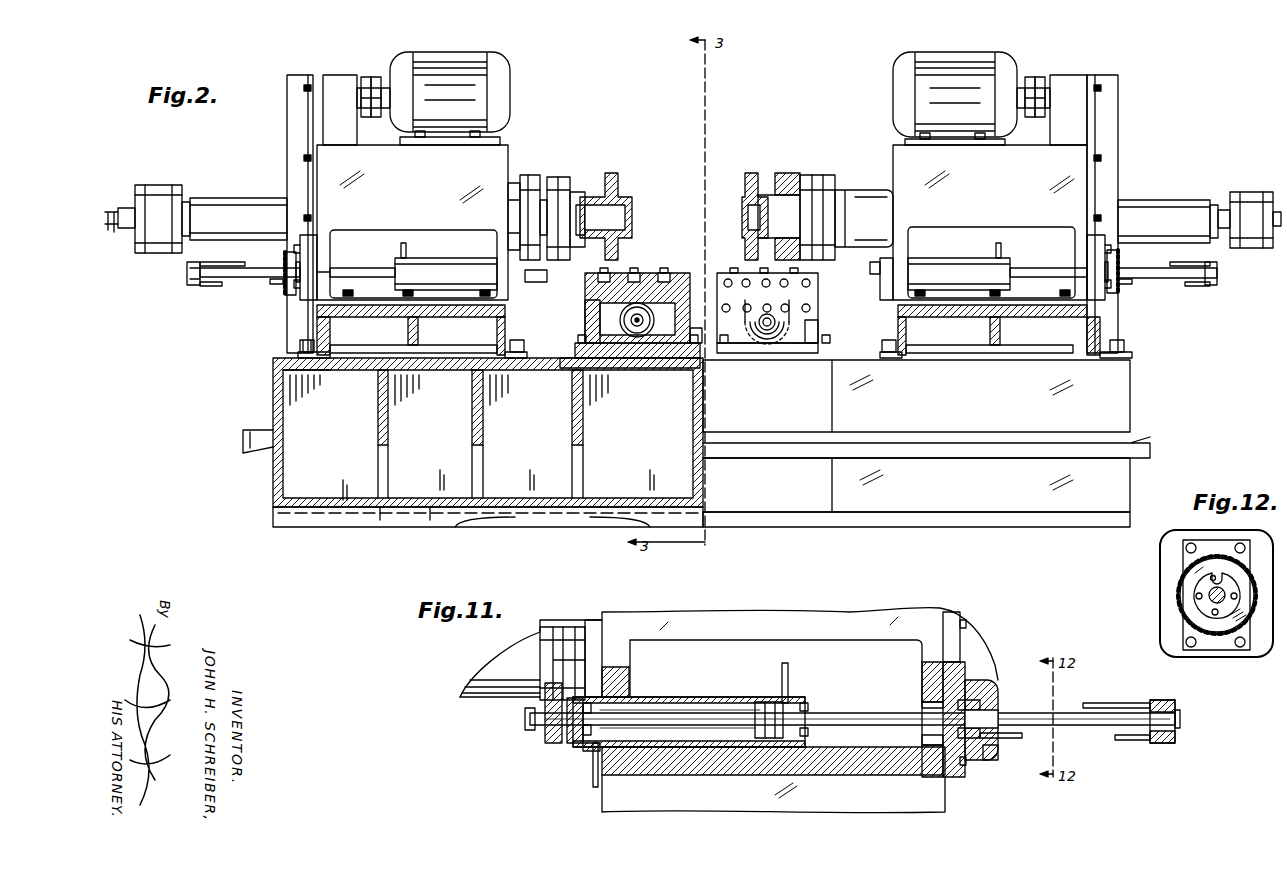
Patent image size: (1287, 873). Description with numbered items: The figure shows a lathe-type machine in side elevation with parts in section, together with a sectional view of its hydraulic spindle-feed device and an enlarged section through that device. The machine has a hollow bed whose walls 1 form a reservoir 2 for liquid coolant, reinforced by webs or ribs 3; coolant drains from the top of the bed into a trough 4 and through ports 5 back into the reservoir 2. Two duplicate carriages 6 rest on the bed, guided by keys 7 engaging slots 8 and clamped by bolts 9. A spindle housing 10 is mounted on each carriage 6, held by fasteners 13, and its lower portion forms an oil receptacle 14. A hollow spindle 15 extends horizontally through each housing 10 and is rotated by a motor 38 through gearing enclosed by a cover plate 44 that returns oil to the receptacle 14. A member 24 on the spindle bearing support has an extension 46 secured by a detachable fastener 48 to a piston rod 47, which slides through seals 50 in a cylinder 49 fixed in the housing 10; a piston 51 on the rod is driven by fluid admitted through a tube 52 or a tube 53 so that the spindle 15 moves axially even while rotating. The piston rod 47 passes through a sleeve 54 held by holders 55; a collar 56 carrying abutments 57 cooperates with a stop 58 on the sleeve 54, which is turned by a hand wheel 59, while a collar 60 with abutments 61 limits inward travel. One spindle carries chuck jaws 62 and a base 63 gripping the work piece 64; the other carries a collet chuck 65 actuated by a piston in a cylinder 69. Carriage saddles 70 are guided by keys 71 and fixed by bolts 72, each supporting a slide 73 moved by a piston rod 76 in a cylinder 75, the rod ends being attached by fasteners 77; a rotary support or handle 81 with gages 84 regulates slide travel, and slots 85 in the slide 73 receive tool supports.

In FIG. 2, the walls of the bed 1 is at (358, 507).
In FIG. 2, the reservoir 2 is at (537, 507).
In FIG. 2, the webs or ribs 3 is at (485, 428).
In FIG. 2, the trough 4 is at (252, 446).
In FIG. 2, the ports 5 is at (282, 448).
In FIG. 2, the carriages 6 is at (333, 333).
In FIG. 11, the carriages 6 is at (920, 812).
In FIG. 2, the keys 7 is at (318, 368).
In FIG. 2, the slots 8 is at (290, 357).
In FIG. 2, the bolts 9 is at (300, 342).
In FIG. 2, the spindle housings 10 is at (503, 163).
In FIG. 11, the spindle housings 10 is at (760, 610).
In FIG. 2, the fasteners 13 is at (408, 296).
In FIG. 2, the oil receptacles 14 is at (704, 326).
In FIG. 2, the hollow spindle 15 is at (250, 207).
In FIG. 2, the member 24 is at (534, 175).
In FIG. 11, the member 24 is at (555, 627).
In FIG. 2, the motor 38 is at (500, 62).
In FIG. 2, the cover plate 44 is at (295, 116).
In FIG. 2, the extension 46 is at (516, 232).
In FIG. 11, the extension 46 is at (560, 745).
In FIG. 2, the piston rod 47 is at (354, 268).
In FIG. 11, the piston rod 47 is at (686, 712).
In FIG. 12, the piston rod 47 is at (1205, 597).
In FIG. 2, the detachable fastener 48 is at (542, 282).
In FIG. 11, the detachable fastener 48 is at (545, 732).
In FIG. 2, the cylinder 49 is at (455, 262).
In FIG. 11, the cylinder 49 is at (693, 747).
In FIG. 11, the seals 50 is at (588, 752).
In FIG. 11, the piston 51 is at (765, 702).
In FIG. 2, the tube 52 is at (400, 251).
In FIG. 11, the tube 52 is at (790, 667).
In FIG. 2, the tube 53 is at (885, 300).
In FIG. 11, the tube 53 is at (594, 787).
In FIG. 2, the sleeve 54 is at (312, 277).
In FIG. 11, the sleeve 54 is at (922, 694).
In FIG. 2, the holders 55 is at (312, 243).
In FIG. 11, the holders 55 is at (965, 680).
In FIG. 12, the holders 55 is at (1222, 545).
In FIG. 11, the collar 56 is at (972, 700).
In FIG. 12, the collar 56 is at (1200, 607).
In FIG. 2, the abutments 57 is at (272, 288).
In FIG. 11, the abutments 57 is at (1010, 738).
In FIG. 12, the abutments 57 is at (1217, 615).
In FIG. 11, the stop 58 is at (998, 702).
In FIG. 12, the stop 58 is at (1200, 583).
In FIG. 2, the hand wheel or handle 59 is at (288, 293).
In FIG. 11, the hand wheel or handle 59 is at (992, 760).
In FIG. 12, the hand wheel or handle 59 is at (1180, 563).
In FIG. 2, the collar 60 is at (192, 275).
In FIG. 11, the collar 60 is at (1162, 745).
In FIG. 2, the abutments 61 is at (215, 263).
In FIG. 11, the abutments 61 is at (1123, 703).
In FIG. 2, the chuck jaws 62 is at (578, 192).
In FIG. 2, the base 63 is at (558, 178).
In FIG. 2, the work piece 64 is at (622, 190).
In FIG. 2, the chuck 65 is at (790, 173).
In FIG. 11, the chuck 65 is at (488, 696).
In FIG. 2, the cylinder 69 is at (1250, 192).
In FIG. 2, the carriage saddles 70 is at (590, 326).
In FIG. 2, the keys 71 is at (577, 375).
In FIG. 2, the bolts 72 is at (580, 341).
In FIG. 2, the slide 73 is at (590, 303).
In FIG. 2, the cylinder 75 is at (645, 337).
In FIG. 2, the piston rod 76 is at (633, 333).
In FIG. 2, the fasteners 77 is at (757, 328).
In FIG. 2, the rotary support or handle 81 is at (783, 336).
In FIG. 2, the gages 84 is at (765, 336).
In FIG. 2, the slots 85 is at (668, 273).